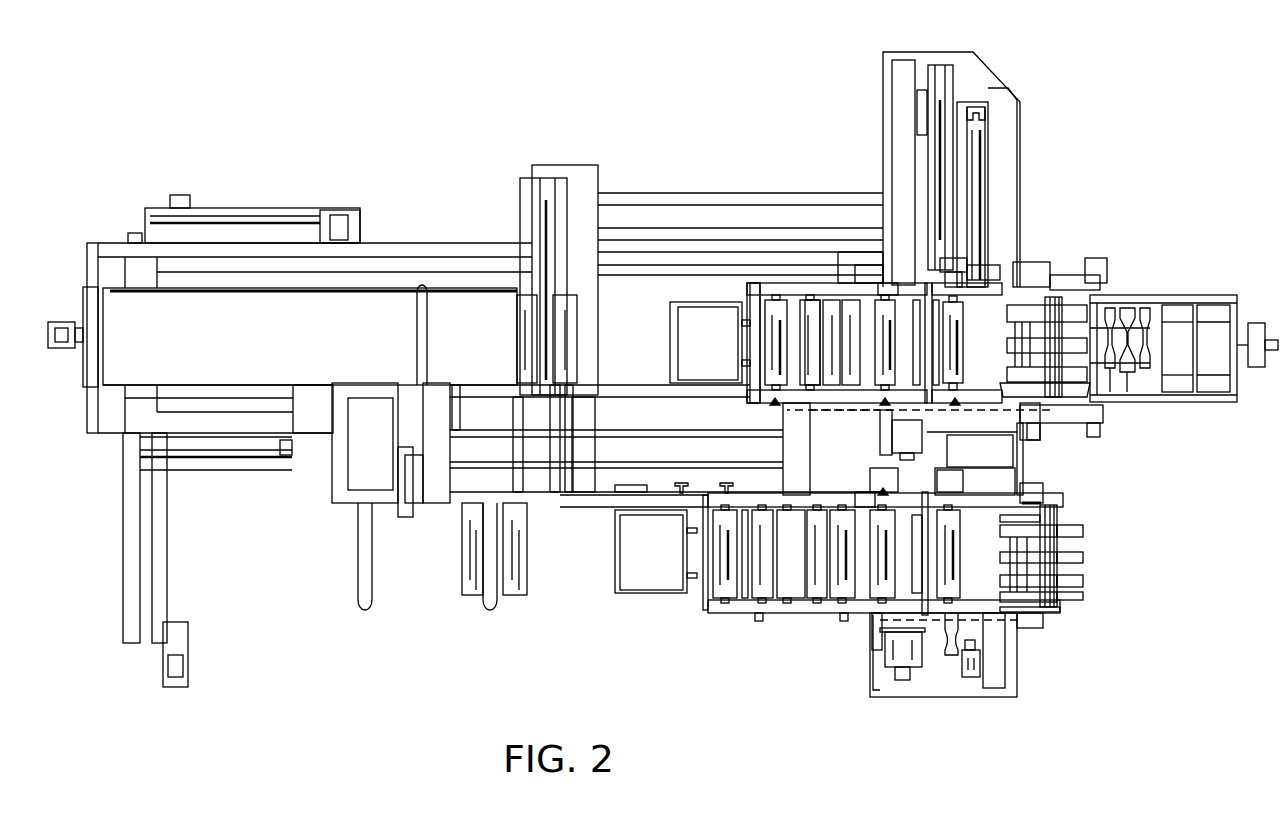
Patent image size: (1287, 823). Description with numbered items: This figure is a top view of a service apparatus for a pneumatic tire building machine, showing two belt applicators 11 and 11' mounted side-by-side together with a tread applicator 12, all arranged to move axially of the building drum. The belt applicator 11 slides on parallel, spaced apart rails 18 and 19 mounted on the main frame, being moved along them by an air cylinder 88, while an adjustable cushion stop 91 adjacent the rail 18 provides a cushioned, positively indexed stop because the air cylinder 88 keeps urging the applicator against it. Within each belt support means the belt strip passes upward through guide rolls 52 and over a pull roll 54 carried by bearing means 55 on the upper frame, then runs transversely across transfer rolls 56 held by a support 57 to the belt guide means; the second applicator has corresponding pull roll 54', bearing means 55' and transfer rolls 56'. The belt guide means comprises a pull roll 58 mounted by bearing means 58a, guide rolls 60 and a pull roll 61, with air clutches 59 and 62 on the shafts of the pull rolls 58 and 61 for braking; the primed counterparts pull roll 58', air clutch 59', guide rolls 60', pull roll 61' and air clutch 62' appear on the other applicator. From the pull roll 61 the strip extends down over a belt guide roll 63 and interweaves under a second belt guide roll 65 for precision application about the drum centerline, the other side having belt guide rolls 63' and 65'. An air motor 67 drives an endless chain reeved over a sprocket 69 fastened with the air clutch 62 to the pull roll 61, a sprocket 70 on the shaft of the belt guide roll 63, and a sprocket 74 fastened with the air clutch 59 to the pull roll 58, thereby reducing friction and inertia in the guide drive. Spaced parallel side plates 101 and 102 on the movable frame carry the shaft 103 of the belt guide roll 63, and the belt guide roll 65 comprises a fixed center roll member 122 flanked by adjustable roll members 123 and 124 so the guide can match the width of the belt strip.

The belt applicator 11 is at (786, 577).
The belt applicator 11' is at (812, 297).
The tread applicator 12 is at (352, 349).
The rail 18 is at (545, 193).
The rail 19 is at (945, 78).
The guide rolls 52 is at (683, 558).
The pull roll 54 is at (704, 568).
The pull roll 54' is at (728, 342).
The bearing means 55 is at (728, 580).
The bearing means 55' is at (751, 358).
The transfer rolls 56 is at (790, 576).
The transfer rolls 56' is at (827, 366).
The support 57 is at (808, 590).
The pull roll 58 is at (850, 489).
The pull roll 58' is at (899, 276).
The bearing means 58a is at (870, 618).
The air clutch 59 is at (873, 466).
The air clutch 59' is at (860, 246).
The guide rolls 60 is at (952, 554).
The guide rolls 60' is at (968, 342).
The pull roll 61 is at (931, 554).
The pull roll 61' is at (974, 343).
The air clutch 62 is at (975, 481).
The air clutch 62' is at (1003, 251).
The belt guide roll 63 is at (1011, 558).
The belt guide roll 63' is at (1031, 347).
The belt guide roll 65 is at (1091, 582).
The belt guide roll 65' is at (1128, 369).
The air motor 67 is at (897, 660).
The sprocket 69 is at (943, 649).
The sprocket 70 is at (1030, 628).
The sprocket 74 is at (882, 650).
The air cylinder 88 is at (975, 185).
The adjustable cushion stop 91 is at (968, 680).
The side plate 101 is at (1060, 612).
The side plate 102 is at (1030, 500).
The shaft 103 is at (1035, 545).
The fixed center roll member 122 is at (1085, 558).
The adjustable roll member 123 is at (1060, 590).
The adjustable roll member 124 is at (1085, 530).